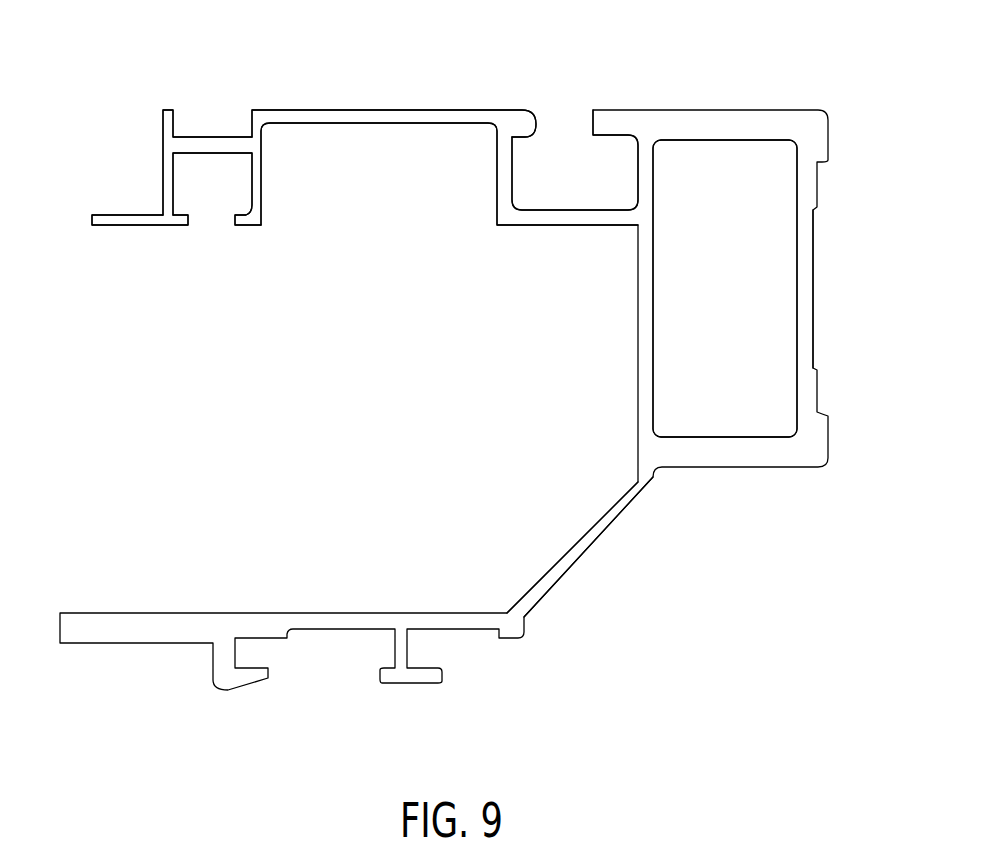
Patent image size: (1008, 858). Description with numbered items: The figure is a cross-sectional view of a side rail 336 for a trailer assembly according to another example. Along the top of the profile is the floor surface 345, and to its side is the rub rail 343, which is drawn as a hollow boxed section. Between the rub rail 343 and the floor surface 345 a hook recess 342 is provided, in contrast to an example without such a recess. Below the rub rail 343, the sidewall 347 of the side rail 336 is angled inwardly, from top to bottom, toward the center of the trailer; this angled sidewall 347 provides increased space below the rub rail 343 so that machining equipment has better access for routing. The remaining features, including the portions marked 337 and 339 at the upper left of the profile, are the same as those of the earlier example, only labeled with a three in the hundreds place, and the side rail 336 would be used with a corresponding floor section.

The side rail 336 is at (828, 89).
The mounting leg 337 is at (145, 220).
The flange 339 is at (107, 230).
The hook recess 342 is at (552, 192).
The rub rail 343 is at (805, 305).
The floor surface 345 is at (402, 100).
The sidewall 347 is at (582, 548).